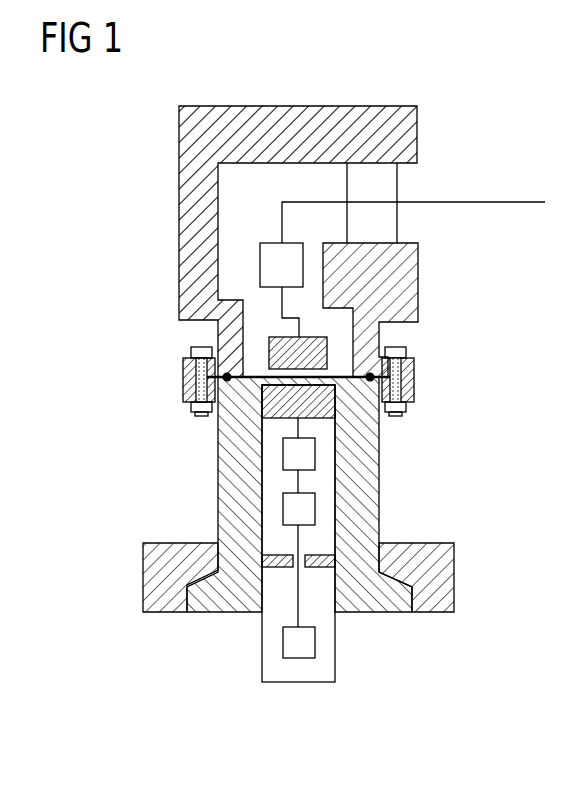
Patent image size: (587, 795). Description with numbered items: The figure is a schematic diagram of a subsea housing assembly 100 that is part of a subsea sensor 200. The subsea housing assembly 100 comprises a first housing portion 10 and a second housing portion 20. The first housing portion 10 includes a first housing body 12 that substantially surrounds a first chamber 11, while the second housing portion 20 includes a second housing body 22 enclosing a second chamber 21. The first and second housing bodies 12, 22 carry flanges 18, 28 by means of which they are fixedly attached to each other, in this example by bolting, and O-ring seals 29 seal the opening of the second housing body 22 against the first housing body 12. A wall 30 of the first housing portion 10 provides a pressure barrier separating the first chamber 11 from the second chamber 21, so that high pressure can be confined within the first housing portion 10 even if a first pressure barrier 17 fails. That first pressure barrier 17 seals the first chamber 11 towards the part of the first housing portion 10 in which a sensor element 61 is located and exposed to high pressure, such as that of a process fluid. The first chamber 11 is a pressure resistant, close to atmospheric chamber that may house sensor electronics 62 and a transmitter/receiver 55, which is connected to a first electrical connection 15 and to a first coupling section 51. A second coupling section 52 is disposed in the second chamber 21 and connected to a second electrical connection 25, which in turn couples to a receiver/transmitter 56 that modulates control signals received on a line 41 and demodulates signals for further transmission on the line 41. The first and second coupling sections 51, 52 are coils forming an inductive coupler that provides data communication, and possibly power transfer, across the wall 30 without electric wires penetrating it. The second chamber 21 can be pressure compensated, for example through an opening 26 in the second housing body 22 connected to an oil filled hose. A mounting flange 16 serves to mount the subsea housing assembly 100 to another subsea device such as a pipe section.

The subsea housing assembly 100 is at (489, 90).
The subsea sensor 200 is at (456, 673).
The first housing portion 10 is at (138, 437).
The first chamber 11 is at (285, 482).
The first housing body 12 is at (230, 467).
The first electrical connection 15 is at (298, 425).
The mounting flange 16 is at (155, 578).
The first pressure barrier 17 is at (278, 568).
The flange 18 is at (413, 388).
The second housing portion 20 is at (107, 211).
The second chamber 21 is at (230, 216).
The second housing body 22 is at (278, 118).
The second electrical connection 25 is at (272, 297).
The opening 26 is at (370, 177).
The flange 28 is at (417, 367).
The O-ring seals 29 is at (193, 352).
The wall 30 is at (252, 370).
The line 41 is at (485, 202).
The first coupling section 51 is at (343, 404).
The second coupling section 52 is at (330, 350).
The transmitter/receiver 55 is at (303, 455).
The receiver/transmitter 56 is at (280, 253).
The sensor element 61 is at (307, 644).
The sensor electronics 62 is at (303, 508).